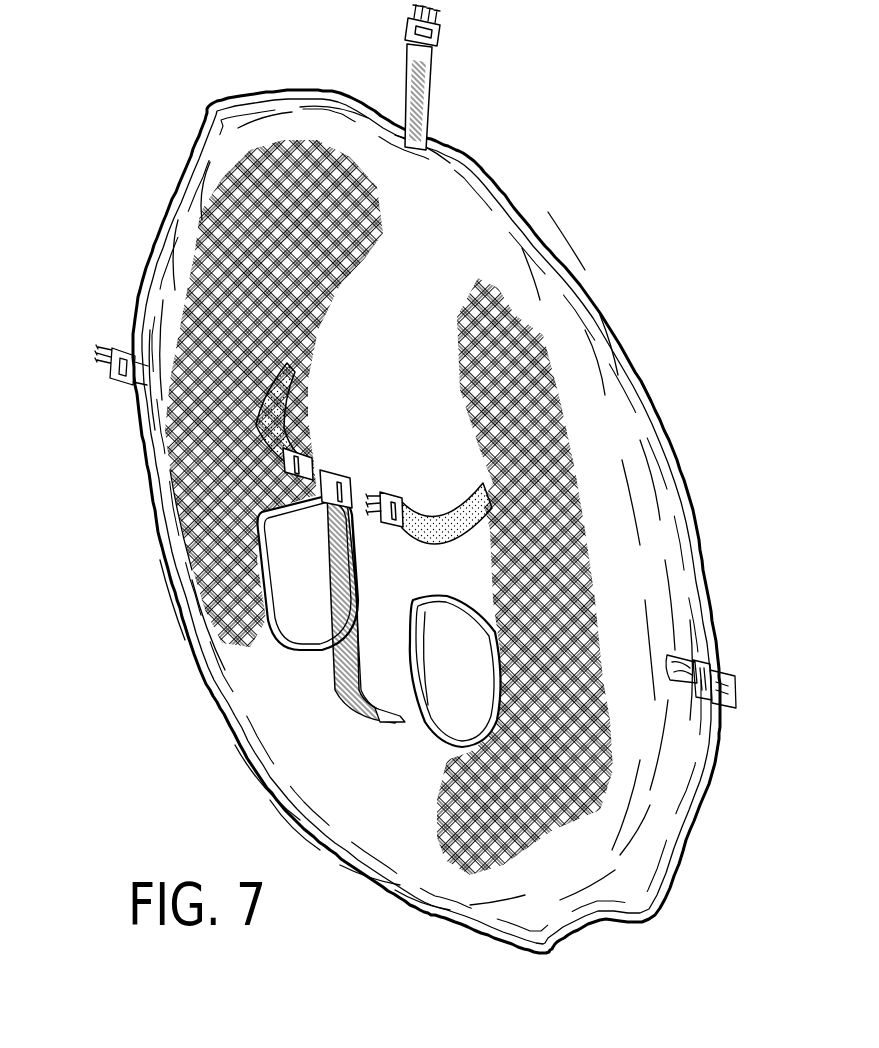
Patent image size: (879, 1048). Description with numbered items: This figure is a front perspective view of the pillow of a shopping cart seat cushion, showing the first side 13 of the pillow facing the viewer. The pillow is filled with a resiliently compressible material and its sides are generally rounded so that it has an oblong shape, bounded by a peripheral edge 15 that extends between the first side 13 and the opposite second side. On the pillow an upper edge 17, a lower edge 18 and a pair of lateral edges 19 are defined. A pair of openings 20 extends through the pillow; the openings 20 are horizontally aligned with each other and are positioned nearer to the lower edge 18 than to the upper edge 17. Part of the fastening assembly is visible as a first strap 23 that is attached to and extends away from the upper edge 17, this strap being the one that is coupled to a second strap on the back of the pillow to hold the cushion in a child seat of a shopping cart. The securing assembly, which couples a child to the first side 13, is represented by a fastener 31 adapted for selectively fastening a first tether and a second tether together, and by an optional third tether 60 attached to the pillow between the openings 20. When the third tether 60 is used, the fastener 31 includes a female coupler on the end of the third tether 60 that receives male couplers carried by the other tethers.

The first side 13 is at (433, 292).
The peripheral edge 15 is at (578, 250).
The upper edge 17 is at (477, 163).
The lower edge 18 is at (378, 883).
The lateral edges 19 is at (157, 535).
The openings 20 is at (455, 668).
The first strap 23 is at (402, 72).
The fastener 31 is at (292, 478).
The third tether 60 is at (380, 492).